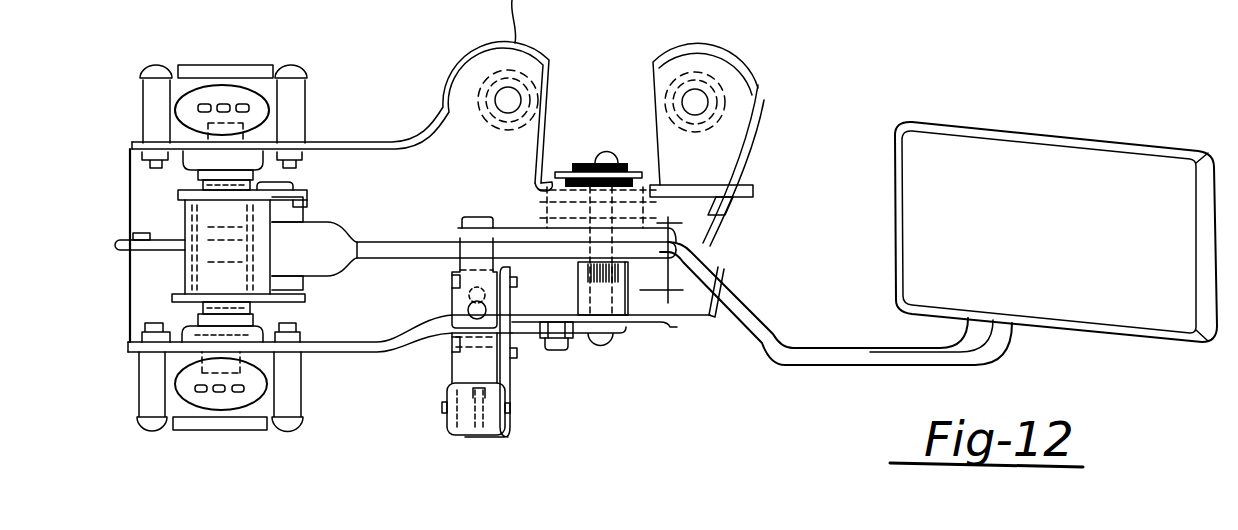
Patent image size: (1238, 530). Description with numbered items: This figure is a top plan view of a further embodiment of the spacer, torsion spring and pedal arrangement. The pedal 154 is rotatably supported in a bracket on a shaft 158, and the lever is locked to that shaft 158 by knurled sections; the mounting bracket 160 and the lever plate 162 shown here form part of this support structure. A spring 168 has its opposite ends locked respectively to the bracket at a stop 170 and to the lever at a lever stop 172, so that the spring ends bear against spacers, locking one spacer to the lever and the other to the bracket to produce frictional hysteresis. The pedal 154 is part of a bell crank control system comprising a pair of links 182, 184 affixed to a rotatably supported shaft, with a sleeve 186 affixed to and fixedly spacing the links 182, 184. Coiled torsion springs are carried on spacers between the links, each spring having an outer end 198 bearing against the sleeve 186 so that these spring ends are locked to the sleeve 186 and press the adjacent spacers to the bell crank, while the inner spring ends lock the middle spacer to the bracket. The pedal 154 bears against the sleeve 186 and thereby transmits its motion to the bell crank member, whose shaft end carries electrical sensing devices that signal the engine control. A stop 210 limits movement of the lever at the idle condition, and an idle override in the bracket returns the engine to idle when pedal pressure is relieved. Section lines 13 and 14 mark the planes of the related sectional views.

The section line 13- 13 is at (632, 125).
The section line 14- 14 is at (87, 256).
The pedal 154 is at (848, 366).
The shaft 158 is at (612, 342).
The mounting bracket 160 is at (549, 180).
The lever plate 162 is at (692, 325).
The spring 168 is at (460, 230).
The stop 170 is at (757, 130).
The lever stop 172 is at (478, 217).
The link 182 is at (307, 205).
The link 184 is at (310, 306).
The sleeve 186 is at (308, 215).
The outer end 198 is at (310, 188).
The stop 210 is at (434, 370).